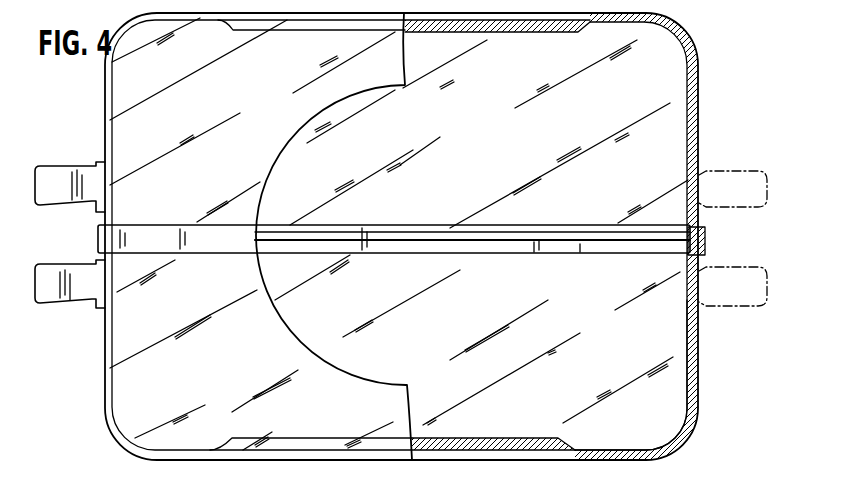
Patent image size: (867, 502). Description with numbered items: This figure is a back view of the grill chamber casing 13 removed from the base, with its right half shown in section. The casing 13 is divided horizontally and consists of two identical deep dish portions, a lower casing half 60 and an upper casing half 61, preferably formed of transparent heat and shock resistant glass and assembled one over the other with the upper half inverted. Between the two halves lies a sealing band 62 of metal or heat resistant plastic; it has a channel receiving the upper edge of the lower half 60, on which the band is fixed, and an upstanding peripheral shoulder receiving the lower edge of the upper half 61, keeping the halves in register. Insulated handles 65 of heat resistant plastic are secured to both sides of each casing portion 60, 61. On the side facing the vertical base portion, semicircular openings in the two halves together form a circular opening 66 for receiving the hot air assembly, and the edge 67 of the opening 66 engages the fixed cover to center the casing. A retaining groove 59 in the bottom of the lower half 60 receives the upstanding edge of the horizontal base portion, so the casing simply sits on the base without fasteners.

The grill chamber casing 13 is at (674, 27).
The retaining groove 59 is at (523, 28).
The lower casing half 60 is at (698, 383).
The upper casing half 61 is at (698, 130).
The sealing band 62 is at (706, 240).
The insulated handles 65 is at (70, 178).
The circular opening 66 is at (342, 178).
The edge of the opening 67 is at (296, 130).